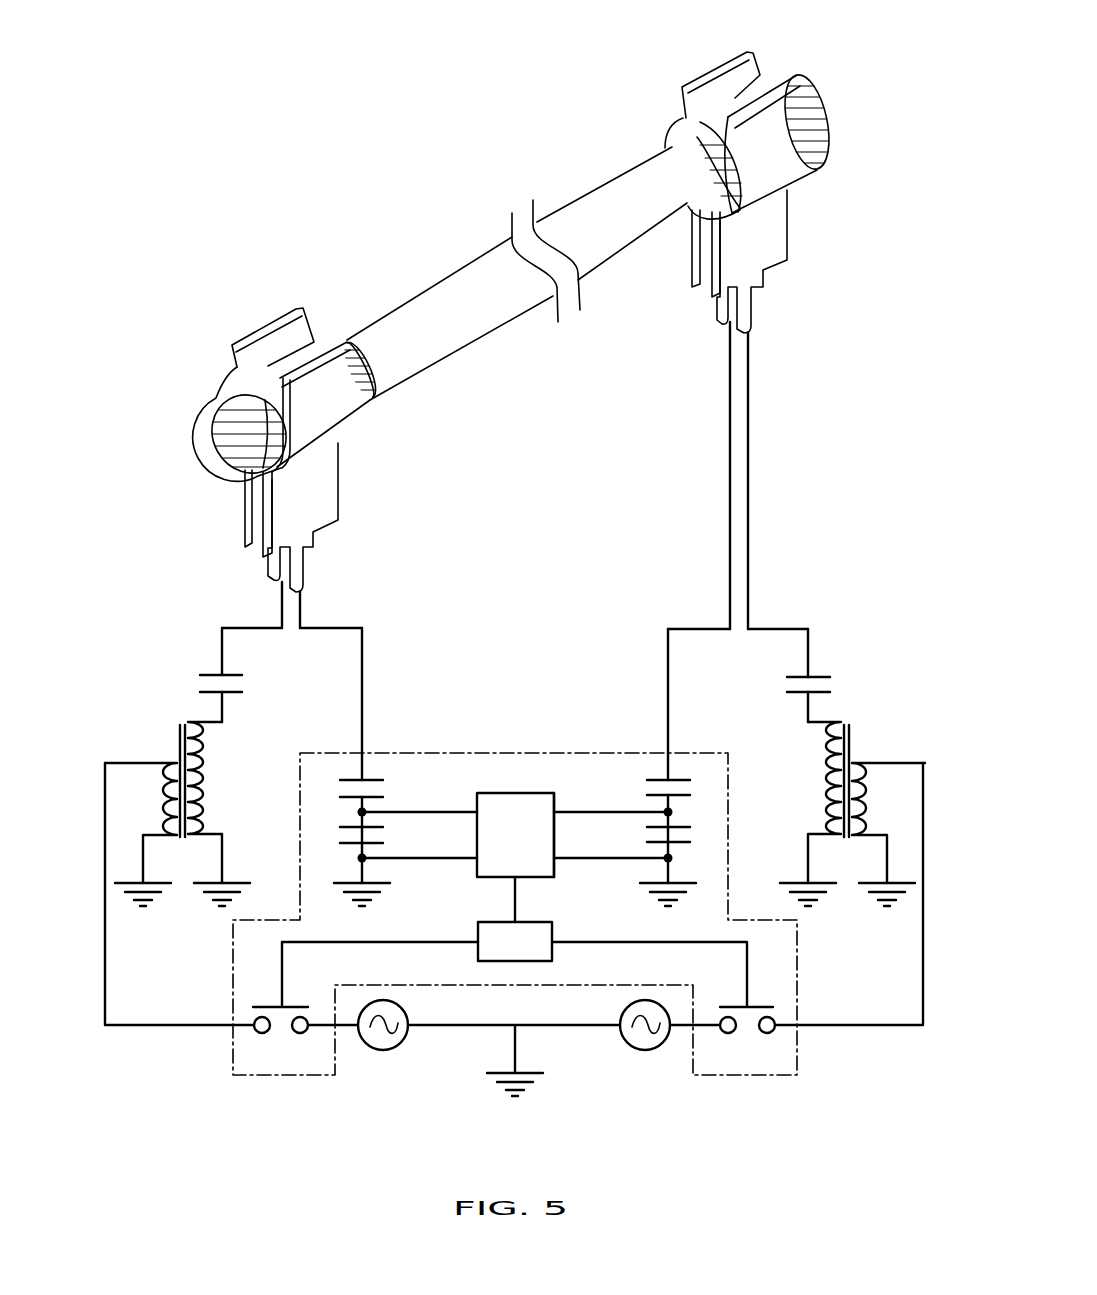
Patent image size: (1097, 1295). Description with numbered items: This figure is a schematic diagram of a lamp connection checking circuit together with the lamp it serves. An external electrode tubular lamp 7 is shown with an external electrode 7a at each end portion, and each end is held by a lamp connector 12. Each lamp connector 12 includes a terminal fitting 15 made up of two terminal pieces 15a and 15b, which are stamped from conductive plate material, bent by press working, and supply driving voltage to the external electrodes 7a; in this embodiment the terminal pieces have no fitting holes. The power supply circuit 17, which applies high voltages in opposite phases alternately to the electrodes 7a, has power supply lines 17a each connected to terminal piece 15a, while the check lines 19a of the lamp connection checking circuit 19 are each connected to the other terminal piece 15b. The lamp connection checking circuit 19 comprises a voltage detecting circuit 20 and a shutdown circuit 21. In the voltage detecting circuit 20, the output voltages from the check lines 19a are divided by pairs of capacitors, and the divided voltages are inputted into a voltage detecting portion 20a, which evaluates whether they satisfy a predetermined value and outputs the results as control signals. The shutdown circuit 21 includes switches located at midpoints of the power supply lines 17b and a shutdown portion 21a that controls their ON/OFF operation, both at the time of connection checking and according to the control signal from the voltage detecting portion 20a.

The external electrode tubular lamp 7 is at (477, 214).
The external electrode 7a is at (233, 343).
The lamp connector 12 is at (342, 309).
The terminal fitting 15 is at (213, 487).
The terminal piece 15a is at (220, 383).
The terminal piece 15b is at (353, 423).
The power supply circuit 17 is at (515, 905).
The power supply line 17a is at (280, 606).
The power supply line 17b is at (150, 1027).
The lamp connection checking circuit 19 is at (515, 873).
The check line 19a is at (303, 604).
The voltage detecting circuit 20 is at (566, 779).
The voltage detecting portion 20a is at (557, 793).
The shutdown circuit 21 is at (514, 1007).
The shutdown portion 21a is at (553, 922).